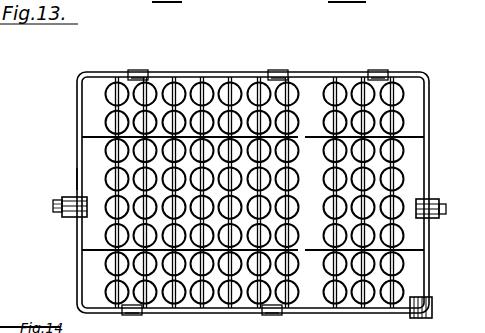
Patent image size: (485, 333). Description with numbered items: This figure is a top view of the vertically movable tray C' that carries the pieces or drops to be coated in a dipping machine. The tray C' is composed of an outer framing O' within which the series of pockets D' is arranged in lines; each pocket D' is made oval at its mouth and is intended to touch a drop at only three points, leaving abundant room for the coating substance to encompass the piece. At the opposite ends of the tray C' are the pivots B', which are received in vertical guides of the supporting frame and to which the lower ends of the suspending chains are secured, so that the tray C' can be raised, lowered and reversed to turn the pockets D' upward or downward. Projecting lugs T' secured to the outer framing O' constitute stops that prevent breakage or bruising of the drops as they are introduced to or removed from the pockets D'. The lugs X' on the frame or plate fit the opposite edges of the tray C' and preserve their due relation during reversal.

The projecting lugs T' is at (255, 188).
The lugs X' is at (259, 12).
The vertically movable tray C' is at (245, 192).
The outer framing O' is at (63, 179).
The pockets D' is at (248, 192).
The pivots B' is at (245, 246).